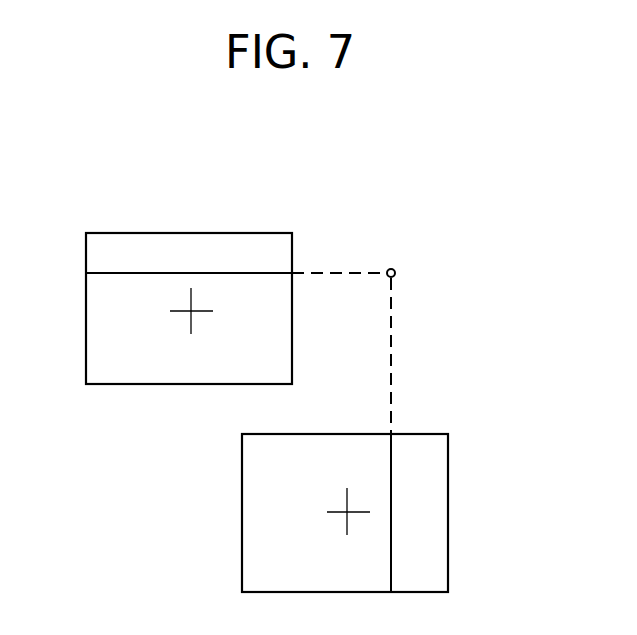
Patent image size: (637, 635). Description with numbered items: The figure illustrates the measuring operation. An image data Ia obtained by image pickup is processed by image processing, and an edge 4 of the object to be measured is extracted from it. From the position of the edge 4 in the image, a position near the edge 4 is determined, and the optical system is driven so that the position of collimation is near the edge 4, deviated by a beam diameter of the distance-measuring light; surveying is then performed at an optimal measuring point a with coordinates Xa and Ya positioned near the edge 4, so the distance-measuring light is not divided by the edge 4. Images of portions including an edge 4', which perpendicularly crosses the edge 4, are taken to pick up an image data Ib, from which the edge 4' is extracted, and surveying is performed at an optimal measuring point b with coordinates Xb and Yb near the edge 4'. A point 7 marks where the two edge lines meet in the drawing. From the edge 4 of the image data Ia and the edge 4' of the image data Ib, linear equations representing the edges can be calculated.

The edge 4 is at (189, 222).
The image data Ia is at (293, 250).
The connection point 7 is at (396, 272).
The image data Ib is at (422, 433).
The edge 4' is at (445, 513).